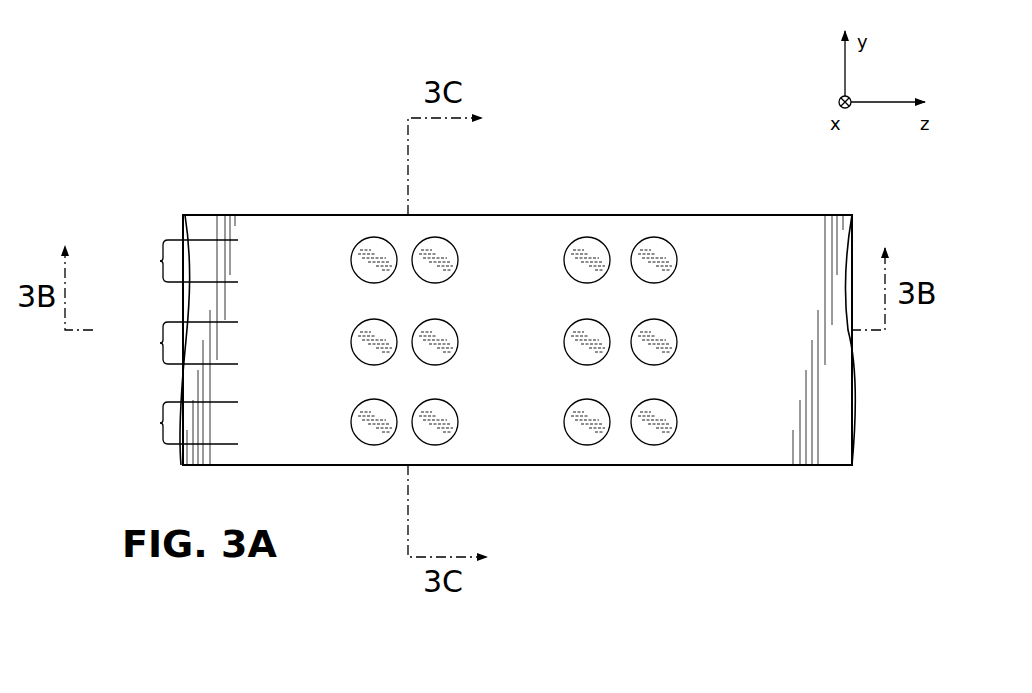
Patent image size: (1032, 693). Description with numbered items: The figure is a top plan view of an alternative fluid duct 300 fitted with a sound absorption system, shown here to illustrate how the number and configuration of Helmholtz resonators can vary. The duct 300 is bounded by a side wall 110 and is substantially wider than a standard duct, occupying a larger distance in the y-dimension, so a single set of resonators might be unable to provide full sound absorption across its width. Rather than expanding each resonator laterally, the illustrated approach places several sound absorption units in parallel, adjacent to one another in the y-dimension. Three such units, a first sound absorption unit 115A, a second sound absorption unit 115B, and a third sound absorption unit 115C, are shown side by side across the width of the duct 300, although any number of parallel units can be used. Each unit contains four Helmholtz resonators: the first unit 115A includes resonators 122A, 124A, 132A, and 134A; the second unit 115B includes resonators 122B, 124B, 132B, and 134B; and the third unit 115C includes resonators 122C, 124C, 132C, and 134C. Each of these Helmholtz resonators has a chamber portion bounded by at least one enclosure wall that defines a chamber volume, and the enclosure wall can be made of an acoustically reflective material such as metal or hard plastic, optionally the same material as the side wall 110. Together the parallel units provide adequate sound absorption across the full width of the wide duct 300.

The duct 300 is at (120, 70).
The side wall 110 is at (259, 211).
The sound absorption unit 115A is at (170, 261).
The sound absorption unit 115B is at (170, 343).
The sound absorption unit 115C is at (170, 423).
The Helmholtz resonator 122A is at (348, 260).
The Helmholtz resonator 122B is at (348, 333).
The Helmholtz resonator 122C is at (349, 405).
The Helmholtz resonator 124A is at (459, 254).
The Helmholtz resonator 124B is at (464, 344).
The Helmholtz resonator 124C is at (461, 421).
The Helmholtz resonator 132A is at (587, 236).
The Helmholtz resonator 132B is at (562, 345).
The Helmholtz resonator 132C is at (583, 446).
The Helmholtz resonator 134A is at (680, 260).
The Helmholtz resonator 134B is at (680, 334).
The Helmholtz resonator 134C is at (680, 414).